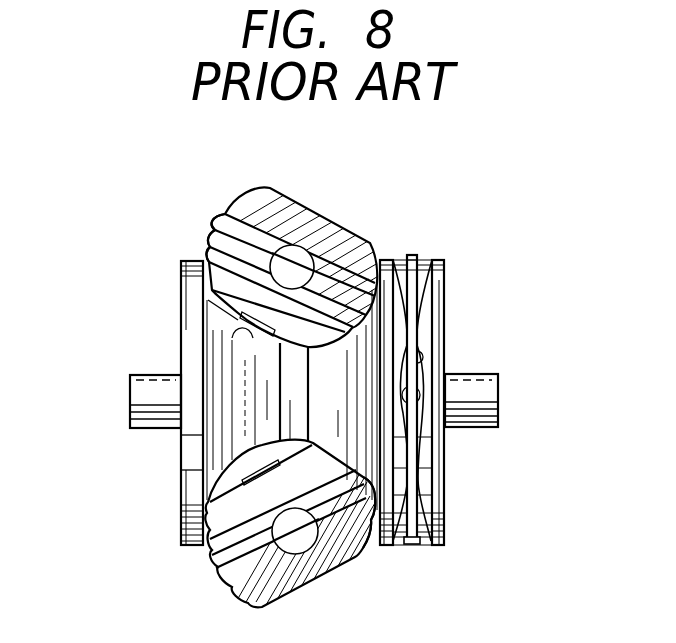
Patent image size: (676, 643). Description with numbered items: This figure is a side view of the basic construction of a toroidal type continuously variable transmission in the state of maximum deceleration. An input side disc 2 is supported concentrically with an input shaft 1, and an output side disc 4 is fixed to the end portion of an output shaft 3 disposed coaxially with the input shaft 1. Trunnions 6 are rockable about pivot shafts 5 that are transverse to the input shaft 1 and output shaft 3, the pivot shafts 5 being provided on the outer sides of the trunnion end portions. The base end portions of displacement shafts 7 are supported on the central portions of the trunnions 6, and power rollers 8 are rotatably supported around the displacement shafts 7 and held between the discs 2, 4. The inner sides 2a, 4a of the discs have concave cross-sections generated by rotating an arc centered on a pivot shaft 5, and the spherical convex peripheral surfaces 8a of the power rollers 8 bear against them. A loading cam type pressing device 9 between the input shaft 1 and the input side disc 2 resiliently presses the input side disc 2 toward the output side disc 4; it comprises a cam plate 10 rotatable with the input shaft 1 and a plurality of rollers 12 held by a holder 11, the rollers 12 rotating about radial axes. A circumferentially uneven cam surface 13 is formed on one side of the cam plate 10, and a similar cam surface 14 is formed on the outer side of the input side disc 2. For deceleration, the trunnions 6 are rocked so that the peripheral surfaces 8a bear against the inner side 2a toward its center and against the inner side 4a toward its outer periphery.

The input shaft 1 is at (495, 393).
The input side disc 2 is at (441, 281).
The inner side of the input side disc 2a is at (382, 548).
The output shaft 3 is at (140, 393).
The output side disc 4 is at (188, 325).
The inner side of the output side disc 4a is at (205, 345).
The pivot shaft 5 is at (305, 285).
The trunnion 6 is at (254, 210).
The displacement shaft 7 is at (240, 318).
The power roller 8 is at (207, 258).
The peripheral surface of the power roller 8a is at (225, 243).
The loading cam type pressing device 9 is at (433, 240).
The cam plate 10 is at (443, 293).
The holder 11 is at (411, 255).
The roller 12 is at (399, 265).
The cam surface 13 is at (425, 345).
The cam surface 14 is at (398, 420).